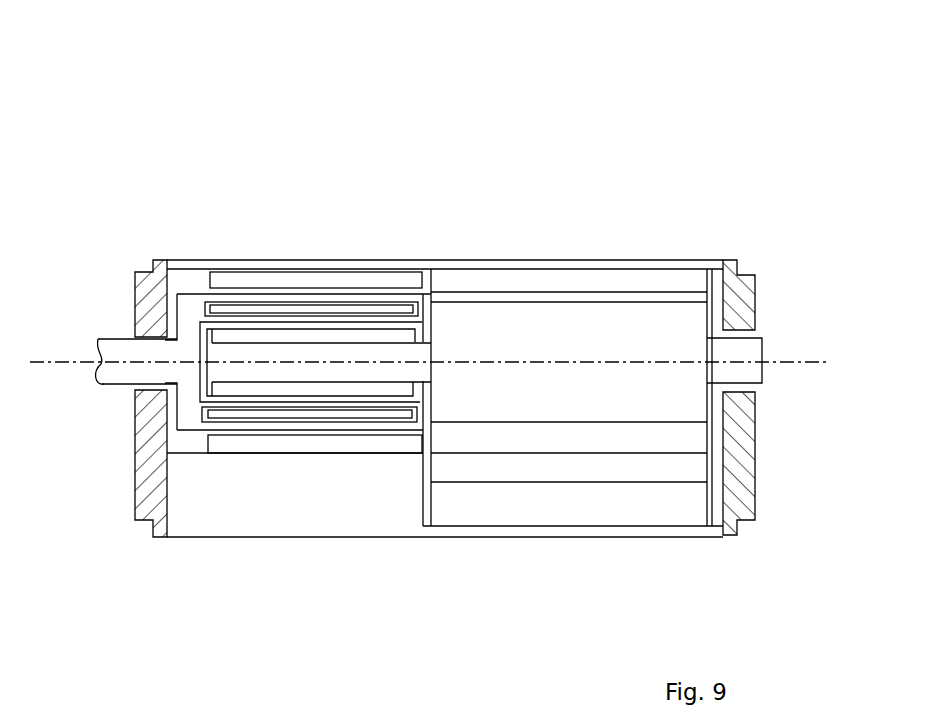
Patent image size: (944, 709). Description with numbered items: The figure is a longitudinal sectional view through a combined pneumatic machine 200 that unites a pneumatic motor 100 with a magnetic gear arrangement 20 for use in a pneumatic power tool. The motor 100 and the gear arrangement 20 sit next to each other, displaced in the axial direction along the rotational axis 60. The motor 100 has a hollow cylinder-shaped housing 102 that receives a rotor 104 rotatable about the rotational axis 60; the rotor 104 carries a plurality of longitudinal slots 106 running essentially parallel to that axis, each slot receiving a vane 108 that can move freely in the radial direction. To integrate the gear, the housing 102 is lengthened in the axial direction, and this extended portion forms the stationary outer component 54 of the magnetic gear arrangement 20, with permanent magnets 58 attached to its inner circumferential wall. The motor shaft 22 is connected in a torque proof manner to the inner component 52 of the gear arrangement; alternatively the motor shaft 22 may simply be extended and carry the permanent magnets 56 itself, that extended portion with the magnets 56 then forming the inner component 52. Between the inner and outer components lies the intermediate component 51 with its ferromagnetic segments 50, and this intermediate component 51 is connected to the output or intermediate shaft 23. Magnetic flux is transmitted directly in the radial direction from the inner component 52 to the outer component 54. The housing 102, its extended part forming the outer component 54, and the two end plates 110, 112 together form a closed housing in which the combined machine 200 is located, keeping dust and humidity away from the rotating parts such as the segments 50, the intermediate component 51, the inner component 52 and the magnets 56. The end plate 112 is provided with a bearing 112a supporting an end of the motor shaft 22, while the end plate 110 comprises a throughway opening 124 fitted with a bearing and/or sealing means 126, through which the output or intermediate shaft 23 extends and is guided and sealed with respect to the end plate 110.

The combined pneumatic machine 200 is at (575, 114).
The pneumatic motor 100 is at (702, 236).
The magnetic gear arrangement 20 is at (329, 210).
The motor shaft 22 is at (418, 368).
The output or intermediate shaft 23 is at (117, 348).
The ferromagnetic segments 50 is at (355, 308).
The intermediate component 51 is at (402, 300).
The inner component 52 is at (272, 370).
The stationary outer component 54 is at (255, 266).
The permanent magnets 56 is at (283, 338).
The permanent magnets 58 is at (225, 282).
The rotational axis 60 is at (57, 365).
The hollow cylinder-shaped housing 102 is at (517, 262).
The rotor 104 is at (579, 337).
The longitudinal slots 106 is at (603, 300).
The vane 108 is at (640, 435).
The end plate 110 is at (152, 264).
The end plate 112 is at (757, 306).
The bearing 112a is at (745, 388).
The throughway opening 124 is at (133, 386).
The bearing and/or sealing means 126 is at (145, 325).